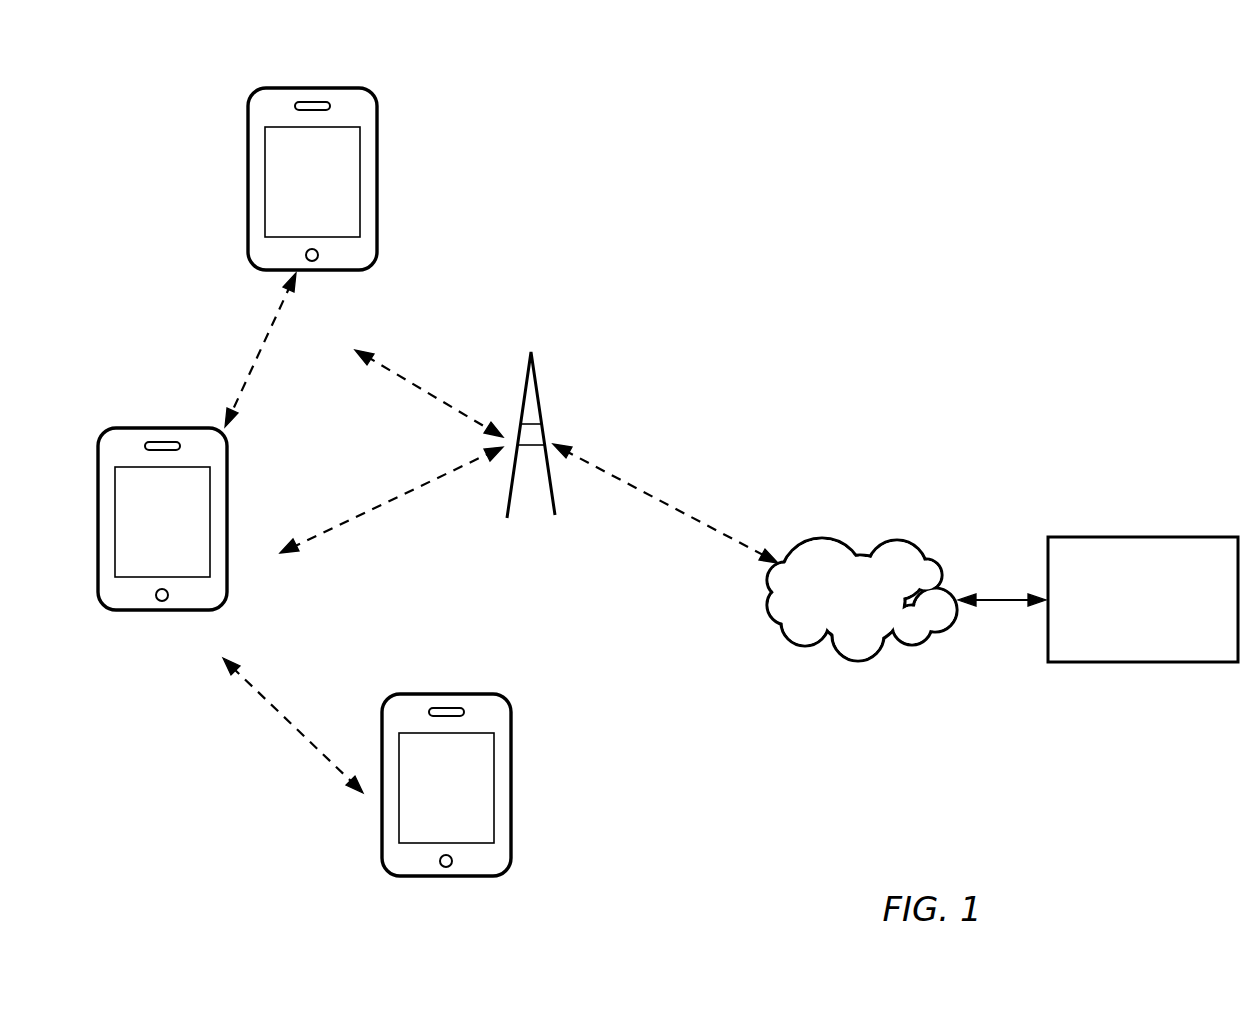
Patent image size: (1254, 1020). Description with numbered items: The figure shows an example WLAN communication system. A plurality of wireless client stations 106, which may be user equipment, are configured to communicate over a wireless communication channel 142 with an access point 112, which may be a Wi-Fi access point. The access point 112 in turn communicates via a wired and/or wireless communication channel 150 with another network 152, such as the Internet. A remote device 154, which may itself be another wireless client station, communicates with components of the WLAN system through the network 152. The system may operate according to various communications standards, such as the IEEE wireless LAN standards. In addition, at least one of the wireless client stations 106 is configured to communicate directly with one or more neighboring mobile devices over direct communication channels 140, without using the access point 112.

The wireless client station 106 is at (311, 271).
The access point 112 is at (550, 518).
The direct communication channel 140 is at (272, 328).
The wireless communication channel 142 is at (417, 385).
The communication channel 150 is at (670, 503).
The network 152 is at (842, 621).
The remote device 154 is at (1124, 635).